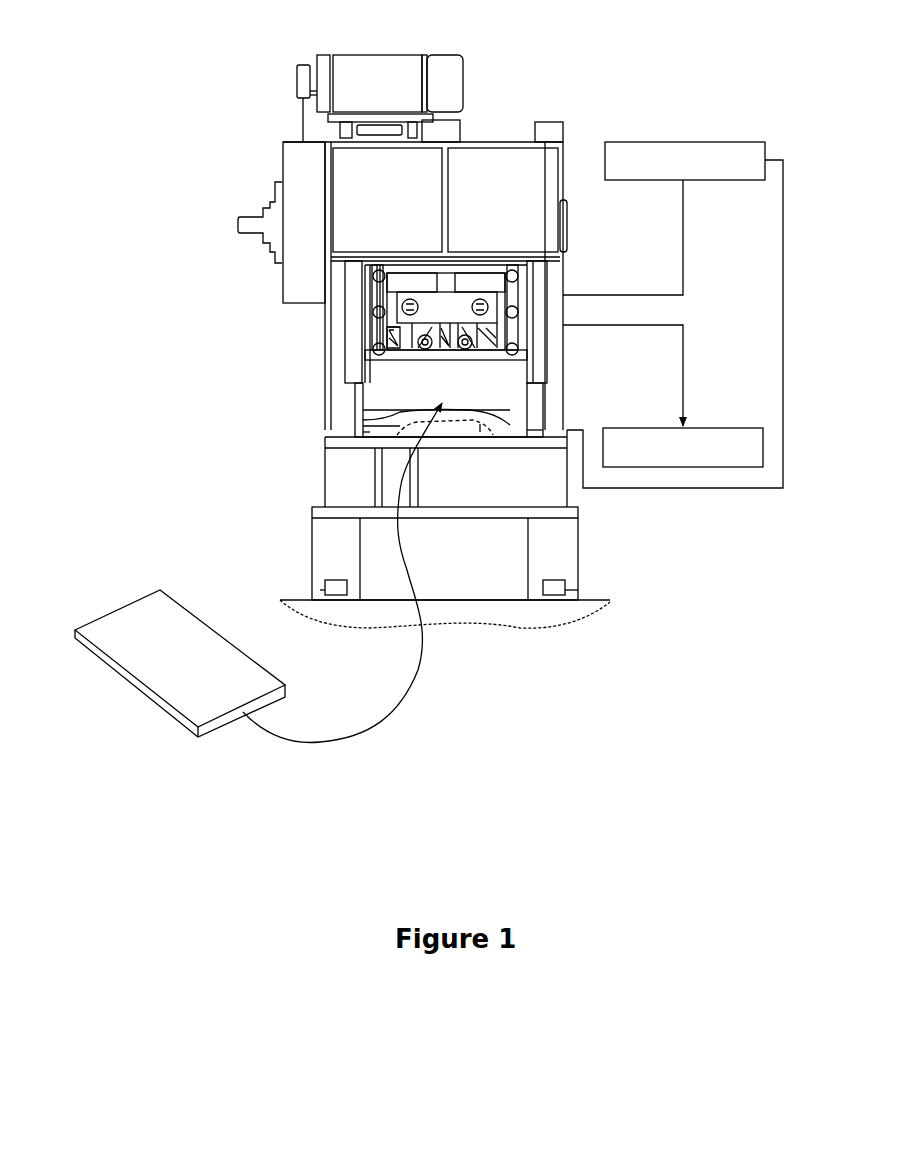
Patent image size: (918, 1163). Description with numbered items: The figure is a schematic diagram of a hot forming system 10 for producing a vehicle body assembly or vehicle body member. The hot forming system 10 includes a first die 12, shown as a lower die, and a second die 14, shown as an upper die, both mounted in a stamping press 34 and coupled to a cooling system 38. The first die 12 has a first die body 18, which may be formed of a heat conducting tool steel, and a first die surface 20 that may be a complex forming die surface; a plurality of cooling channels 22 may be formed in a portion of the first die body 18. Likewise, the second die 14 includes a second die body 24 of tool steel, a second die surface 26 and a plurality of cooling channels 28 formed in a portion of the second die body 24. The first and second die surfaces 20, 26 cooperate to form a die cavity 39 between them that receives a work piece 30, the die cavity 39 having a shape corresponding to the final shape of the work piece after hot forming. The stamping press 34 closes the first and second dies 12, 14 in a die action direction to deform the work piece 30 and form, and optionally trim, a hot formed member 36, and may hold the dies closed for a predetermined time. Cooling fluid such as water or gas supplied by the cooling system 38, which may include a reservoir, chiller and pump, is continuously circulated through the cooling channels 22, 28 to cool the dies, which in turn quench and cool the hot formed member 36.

The hot forming system 10 is at (598, 118).
The first die 12 is at (503, 424).
The second die 14 is at (513, 338).
The first die body 18 is at (370, 430).
The first die surface 20 is at (403, 403).
The cooling channels 22 is at (480, 427).
The second die body 24 is at (390, 350).
The second die surface 26 is at (418, 364).
The cooling channels 28 is at (463, 363).
The work piece 30 is at (258, 573).
The stamping press 34 is at (445, 200).
The hot formed member 36 is at (732, 428).
The cooling system 38 is at (731, 142).
The die cavity 39 is at (388, 392).